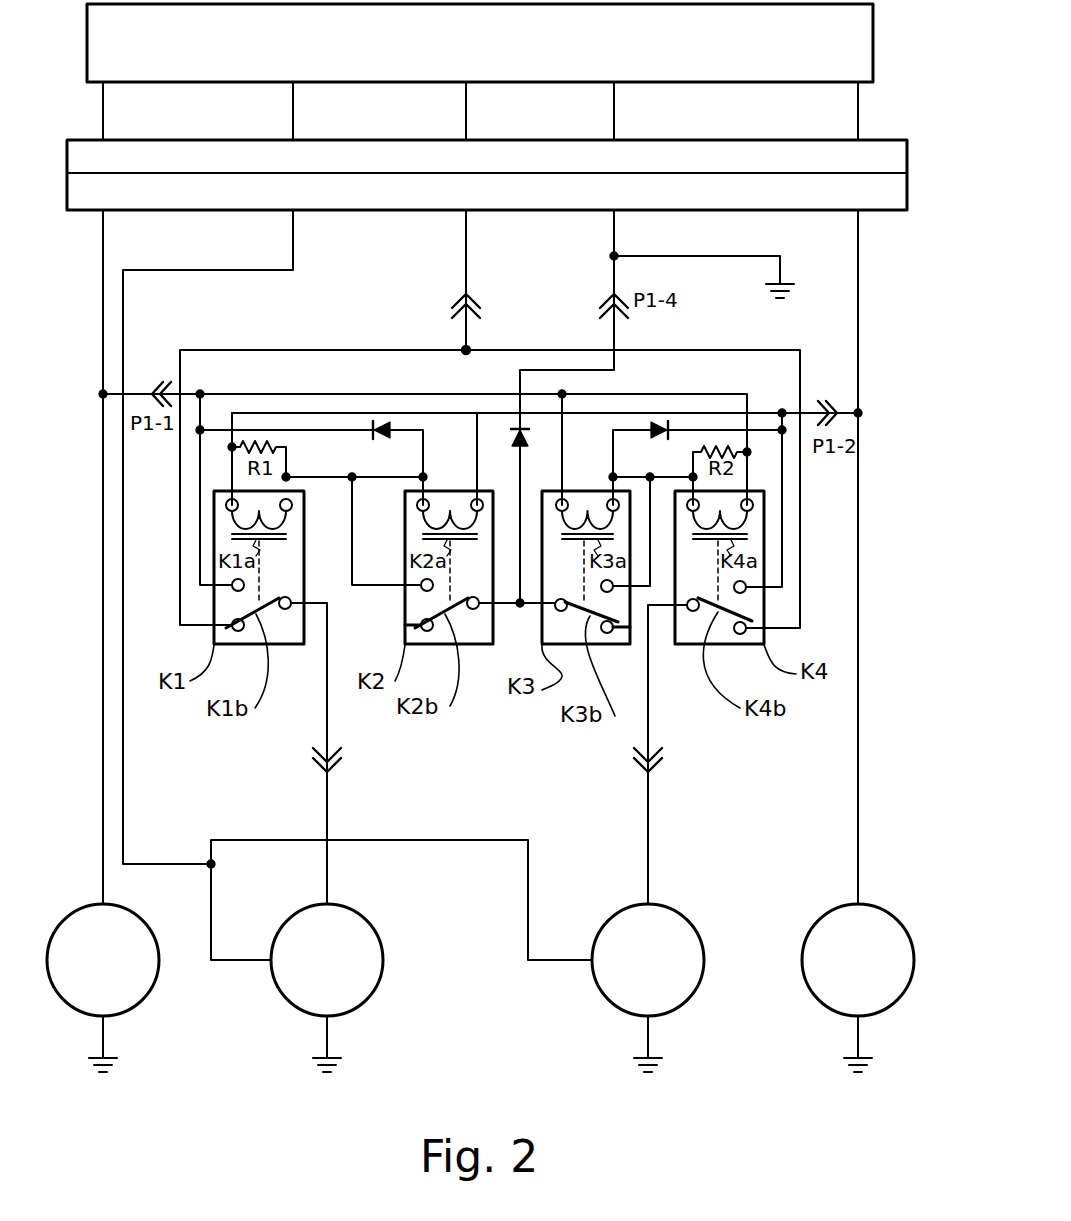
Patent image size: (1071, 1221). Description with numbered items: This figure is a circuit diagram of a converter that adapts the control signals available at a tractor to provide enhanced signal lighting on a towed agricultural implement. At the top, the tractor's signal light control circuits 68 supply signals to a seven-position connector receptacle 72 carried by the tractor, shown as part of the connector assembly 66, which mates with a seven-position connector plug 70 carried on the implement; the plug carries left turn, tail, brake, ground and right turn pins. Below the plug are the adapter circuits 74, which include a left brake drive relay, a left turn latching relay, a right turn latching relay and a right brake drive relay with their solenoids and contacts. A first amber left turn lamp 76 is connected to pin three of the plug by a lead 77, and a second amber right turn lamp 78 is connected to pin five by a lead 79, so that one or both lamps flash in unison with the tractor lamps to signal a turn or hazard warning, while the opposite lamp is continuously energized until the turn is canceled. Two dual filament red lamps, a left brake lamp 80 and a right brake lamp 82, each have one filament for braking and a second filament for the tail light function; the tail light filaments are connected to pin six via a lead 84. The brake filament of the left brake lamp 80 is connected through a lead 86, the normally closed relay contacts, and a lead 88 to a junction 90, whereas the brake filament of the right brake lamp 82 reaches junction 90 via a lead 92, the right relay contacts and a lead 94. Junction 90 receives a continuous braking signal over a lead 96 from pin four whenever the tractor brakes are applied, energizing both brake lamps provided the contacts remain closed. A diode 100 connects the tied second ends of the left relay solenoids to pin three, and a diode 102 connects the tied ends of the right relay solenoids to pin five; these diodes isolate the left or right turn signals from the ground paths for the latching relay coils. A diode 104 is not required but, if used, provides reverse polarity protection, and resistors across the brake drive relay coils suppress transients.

The connector 66 is at (500, 180).
The signal light control circuits 68 is at (874, 72).
The connector plug 70 is at (513, 216).
The connector receptacle 72 is at (524, 136).
The adapter circuits 74 is at (866, 612).
The left turn lamp 76 is at (137, 1003).
The lead 77 is at (103, 552).
The right turn lamp 78 is at (818, 1005).
The lead 79 is at (859, 504).
The left brake lamp 80 is at (375, 1000).
The right brake lamp 82 is at (598, 985).
The lead 84 is at (123, 794).
The lead 86 is at (328, 818).
The lead 88 is at (245, 350).
The junction 90 is at (467, 350).
The lead 92 is at (648, 858).
The lead 94 is at (676, 350).
The lead 96 is at (465, 345).
The diode 100 is at (380, 440).
The diode 102 is at (655, 440).
The diode 104 is at (515, 440).